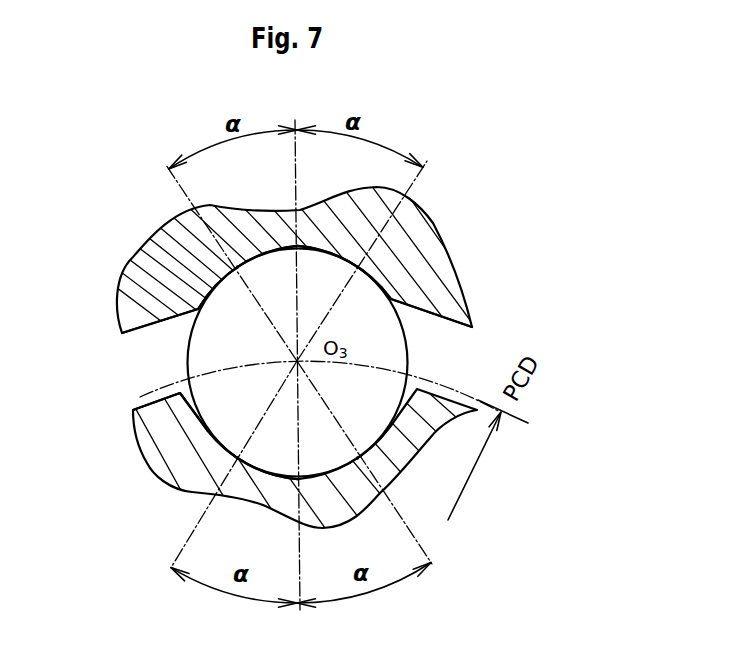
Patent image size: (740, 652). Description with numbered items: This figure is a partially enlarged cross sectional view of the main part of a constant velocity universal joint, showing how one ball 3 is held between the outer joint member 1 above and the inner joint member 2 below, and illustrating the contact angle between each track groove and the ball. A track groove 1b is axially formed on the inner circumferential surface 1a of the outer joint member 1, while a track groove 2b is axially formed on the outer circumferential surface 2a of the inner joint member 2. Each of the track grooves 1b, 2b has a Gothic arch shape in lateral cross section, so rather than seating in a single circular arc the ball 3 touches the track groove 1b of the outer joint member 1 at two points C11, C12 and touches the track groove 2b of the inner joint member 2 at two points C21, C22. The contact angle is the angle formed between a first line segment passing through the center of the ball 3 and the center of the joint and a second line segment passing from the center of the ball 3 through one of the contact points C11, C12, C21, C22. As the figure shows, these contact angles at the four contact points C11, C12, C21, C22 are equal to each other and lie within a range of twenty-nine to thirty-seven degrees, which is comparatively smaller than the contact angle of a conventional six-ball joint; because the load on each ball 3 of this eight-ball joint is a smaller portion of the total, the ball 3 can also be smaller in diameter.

The outer joint member 1 is at (415, 247).
The inner circumferential surface 1a is at (143, 327).
The track groove 1b is at (383, 288).
The inner joint member 2 is at (177, 463).
The outer circumferential surface 2a is at (135, 395).
The track groove 2b is at (206, 425).
The ball 3 is at (205, 352).
The contact point C11 is at (357, 268).
The contact point C12 is at (238, 270).
The contact point C21 is at (359, 455).
The contact point C22 is at (238, 458).